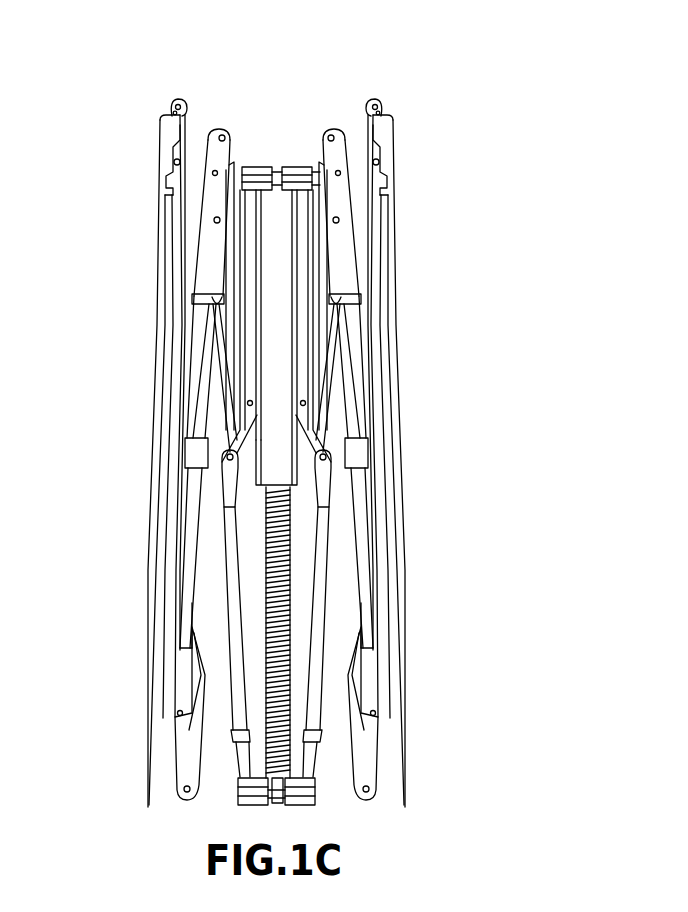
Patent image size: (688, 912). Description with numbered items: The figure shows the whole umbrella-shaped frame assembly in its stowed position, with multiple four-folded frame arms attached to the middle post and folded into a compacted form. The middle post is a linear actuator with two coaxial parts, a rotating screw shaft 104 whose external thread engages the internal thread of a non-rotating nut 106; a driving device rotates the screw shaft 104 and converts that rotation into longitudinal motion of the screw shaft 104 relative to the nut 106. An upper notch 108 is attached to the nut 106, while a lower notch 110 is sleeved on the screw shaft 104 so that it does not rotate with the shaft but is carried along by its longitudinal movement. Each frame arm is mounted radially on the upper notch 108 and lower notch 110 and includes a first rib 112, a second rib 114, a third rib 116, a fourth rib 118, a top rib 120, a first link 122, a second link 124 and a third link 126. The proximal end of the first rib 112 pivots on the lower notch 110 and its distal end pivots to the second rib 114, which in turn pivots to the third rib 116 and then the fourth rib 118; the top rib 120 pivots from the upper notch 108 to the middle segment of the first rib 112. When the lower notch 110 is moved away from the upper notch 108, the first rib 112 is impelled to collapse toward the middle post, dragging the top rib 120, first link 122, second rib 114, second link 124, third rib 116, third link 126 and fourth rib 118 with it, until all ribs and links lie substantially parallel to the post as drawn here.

The rotating screw shaft 104 is at (268, 585).
The non-rotating nut 106 is at (274, 385).
The upper notch 108 is at (260, 190).
The lower notch 110 is at (252, 782).
The first rib 112 is at (322, 613).
The second rib 114 is at (362, 540).
The third rib 116 is at (386, 403).
The fourth rib 118 is at (396, 367).
The top rib 120 is at (305, 317).
The first link 122 is at (315, 207).
The second link 124 is at (358, 742).
The third link 126 is at (338, 126).